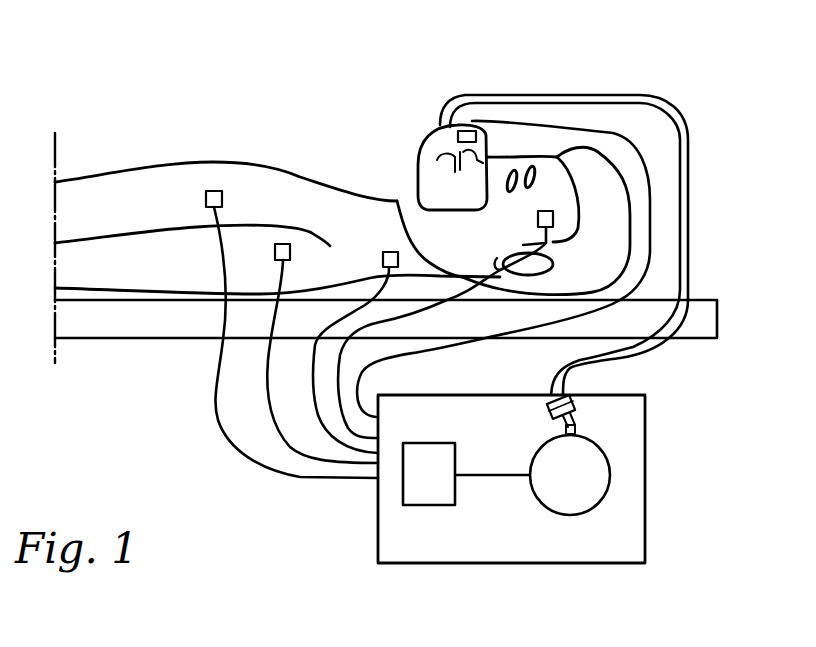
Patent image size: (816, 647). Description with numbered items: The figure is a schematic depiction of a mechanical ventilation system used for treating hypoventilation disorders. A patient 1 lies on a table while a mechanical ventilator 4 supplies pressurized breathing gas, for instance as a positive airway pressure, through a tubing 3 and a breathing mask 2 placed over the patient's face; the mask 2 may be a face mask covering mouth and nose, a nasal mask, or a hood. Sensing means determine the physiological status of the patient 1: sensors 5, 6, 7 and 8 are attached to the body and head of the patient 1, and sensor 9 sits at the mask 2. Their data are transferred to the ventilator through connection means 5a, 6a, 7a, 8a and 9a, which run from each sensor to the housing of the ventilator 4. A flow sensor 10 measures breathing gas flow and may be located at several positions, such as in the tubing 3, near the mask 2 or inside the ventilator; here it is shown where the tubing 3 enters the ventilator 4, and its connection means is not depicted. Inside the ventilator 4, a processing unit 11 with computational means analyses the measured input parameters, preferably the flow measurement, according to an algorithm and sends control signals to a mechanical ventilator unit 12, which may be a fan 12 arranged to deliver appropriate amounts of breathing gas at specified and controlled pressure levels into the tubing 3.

The patient 1 is at (183, 156).
The breathing mask 2 is at (425, 157).
The tubing 3 is at (440, 120).
The mechanical ventilator 4 is at (556, 460).
The sensor 5 is at (272, 250).
The connection means 5a is at (267, 365).
The sensor 6 is at (206, 197).
The connection means 6a is at (255, 455).
The sensor 7 is at (385, 262).
The connection means 7a is at (317, 403).
The sensor 8 is at (538, 221).
The connection means 8a is at (400, 318).
The sensor 9 is at (477, 137).
The connection means 9a is at (410, 360).
The flow sensor 10 is at (574, 402).
The processing unit 11 is at (416, 487).
The mechanical ventilator unit 12 is at (556, 488).